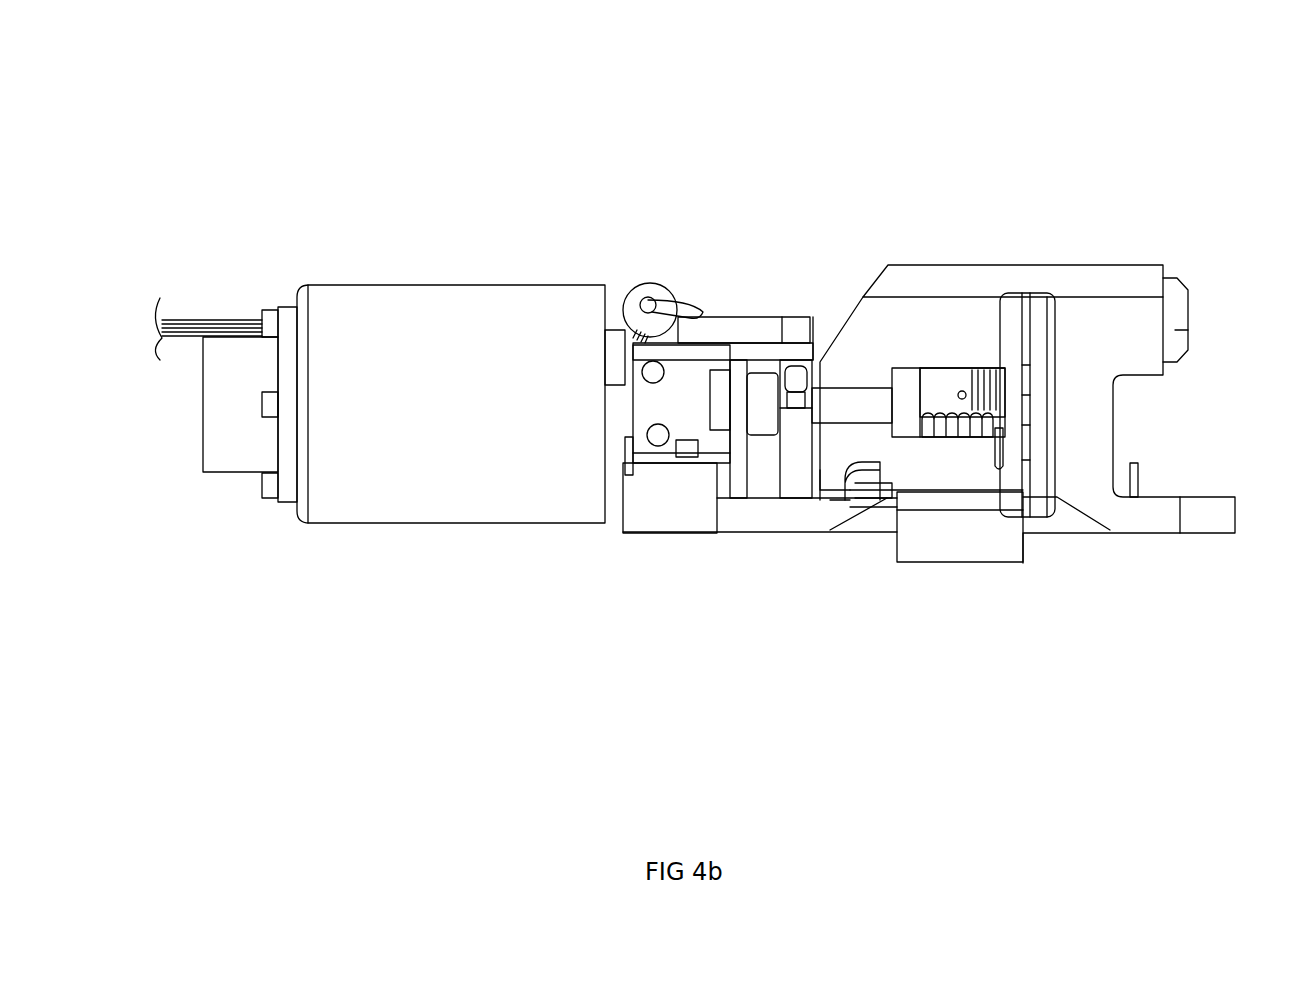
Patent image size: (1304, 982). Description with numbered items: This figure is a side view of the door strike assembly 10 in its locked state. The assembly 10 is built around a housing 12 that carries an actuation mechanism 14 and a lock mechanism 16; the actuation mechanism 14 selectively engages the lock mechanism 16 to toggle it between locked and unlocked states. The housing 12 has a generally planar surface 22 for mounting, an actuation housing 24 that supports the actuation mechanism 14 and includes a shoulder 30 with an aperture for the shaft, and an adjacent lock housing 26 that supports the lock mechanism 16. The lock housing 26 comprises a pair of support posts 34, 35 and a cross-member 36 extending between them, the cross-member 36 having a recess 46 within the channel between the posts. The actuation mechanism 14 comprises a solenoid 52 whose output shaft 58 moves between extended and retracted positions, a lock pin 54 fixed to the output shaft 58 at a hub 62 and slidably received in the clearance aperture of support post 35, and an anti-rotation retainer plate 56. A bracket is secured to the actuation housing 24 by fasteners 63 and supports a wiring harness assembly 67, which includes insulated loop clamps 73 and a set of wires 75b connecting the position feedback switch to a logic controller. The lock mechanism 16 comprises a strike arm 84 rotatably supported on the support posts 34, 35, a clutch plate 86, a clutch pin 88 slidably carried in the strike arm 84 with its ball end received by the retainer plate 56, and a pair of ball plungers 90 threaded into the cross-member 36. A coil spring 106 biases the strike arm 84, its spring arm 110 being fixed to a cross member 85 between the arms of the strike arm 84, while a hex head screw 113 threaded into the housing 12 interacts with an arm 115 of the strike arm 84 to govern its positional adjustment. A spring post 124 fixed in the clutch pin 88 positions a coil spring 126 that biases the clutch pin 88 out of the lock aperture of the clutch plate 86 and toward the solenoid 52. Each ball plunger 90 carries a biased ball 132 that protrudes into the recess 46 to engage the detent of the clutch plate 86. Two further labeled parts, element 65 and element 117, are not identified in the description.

The door strike assembly 10 is at (567, 133).
The housing 12 is at (1221, 537).
The actuation mechanism 14 is at (380, 567).
The lock mechanism 16 is at (872, 378).
The planar surface 22 is at (1098, 533).
The actuation housing 24 is at (687, 535).
The lock housing 26 is at (1073, 262).
The shoulder 30 is at (648, 497).
The support post 34 is at (1105, 436).
The support post 35 is at (847, 450).
The cross-member 36 is at (1140, 278).
The recess 46 is at (983, 362).
The solenoid 52 is at (300, 288).
The lock pin 54 is at (822, 478).
The anti-rotation retainer plate 56 is at (792, 313).
The output shaft 58 is at (737, 392).
The hub 62 is at (765, 377).
The fasteners 63 is at (653, 372).
The mounting plate 65 is at (788, 325).
The wiring harness assembly 67 is at (176, 300).
The insulated loop clamps 73 is at (647, 287).
The wires 75b is at (687, 302).
The strike arm 84 is at (967, 565).
The cross member 85 is at (972, 447).
The clutch plate 86 is at (1037, 290).
The clutch pin 88 is at (902, 338).
The ball plungers 90 is at (1198, 294).
The coil spring 106 is at (945, 442).
The spring arm 110 is at (988, 462).
The hex head screw 113 is at (848, 505).
The arm 115 is at (873, 487).
The shaft 117 is at (866, 466).
The spring post 124 is at (960, 392).
The coil spring 126 is at (957, 383).
The biased ball 132 is at (1015, 320).